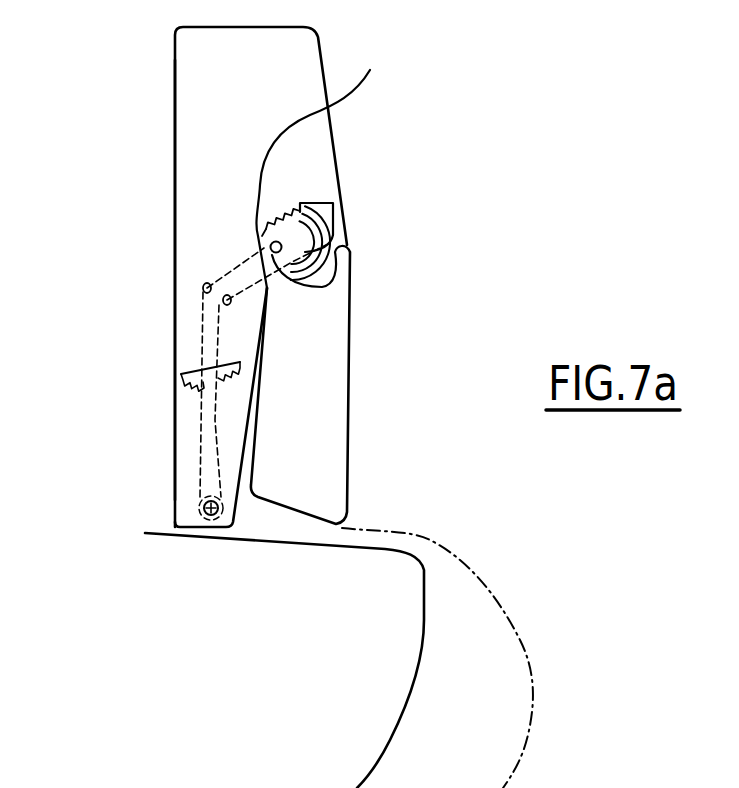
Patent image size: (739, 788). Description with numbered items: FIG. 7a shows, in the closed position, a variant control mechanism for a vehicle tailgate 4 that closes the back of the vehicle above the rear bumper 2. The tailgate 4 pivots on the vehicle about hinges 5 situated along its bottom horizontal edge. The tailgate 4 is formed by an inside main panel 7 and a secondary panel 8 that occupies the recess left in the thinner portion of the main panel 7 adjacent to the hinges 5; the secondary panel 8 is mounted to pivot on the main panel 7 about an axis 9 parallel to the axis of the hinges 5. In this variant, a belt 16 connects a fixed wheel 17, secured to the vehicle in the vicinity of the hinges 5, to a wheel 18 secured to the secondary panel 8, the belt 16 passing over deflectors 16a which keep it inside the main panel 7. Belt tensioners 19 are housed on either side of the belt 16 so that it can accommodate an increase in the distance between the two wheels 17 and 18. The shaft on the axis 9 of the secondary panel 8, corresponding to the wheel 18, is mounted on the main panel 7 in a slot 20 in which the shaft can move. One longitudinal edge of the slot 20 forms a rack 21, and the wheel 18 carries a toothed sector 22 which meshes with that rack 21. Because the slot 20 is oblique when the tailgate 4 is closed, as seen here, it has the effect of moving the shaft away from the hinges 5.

The rear bumper 2 is at (385, 692).
The tailgate 4 is at (358, 133).
The hinges 5 is at (194, 509).
The main panel 7 is at (193, 268).
The secondary panel 8 is at (327, 382).
The axis 9 is at (330, 287).
The belt 16 is at (202, 347).
The deflectors 16a is at (222, 310).
The fixed wheel 17 is at (208, 520).
The wheel 18 is at (258, 237).
The belt tensioners 19 is at (200, 377).
The slot 20 is at (333, 221).
The rack 21 is at (283, 222).
The toothed sector 22 is at (326, 159).